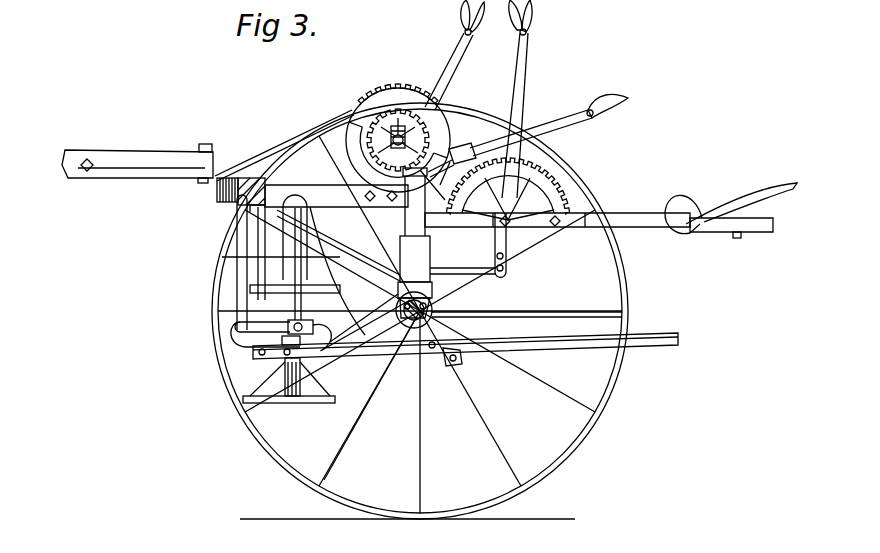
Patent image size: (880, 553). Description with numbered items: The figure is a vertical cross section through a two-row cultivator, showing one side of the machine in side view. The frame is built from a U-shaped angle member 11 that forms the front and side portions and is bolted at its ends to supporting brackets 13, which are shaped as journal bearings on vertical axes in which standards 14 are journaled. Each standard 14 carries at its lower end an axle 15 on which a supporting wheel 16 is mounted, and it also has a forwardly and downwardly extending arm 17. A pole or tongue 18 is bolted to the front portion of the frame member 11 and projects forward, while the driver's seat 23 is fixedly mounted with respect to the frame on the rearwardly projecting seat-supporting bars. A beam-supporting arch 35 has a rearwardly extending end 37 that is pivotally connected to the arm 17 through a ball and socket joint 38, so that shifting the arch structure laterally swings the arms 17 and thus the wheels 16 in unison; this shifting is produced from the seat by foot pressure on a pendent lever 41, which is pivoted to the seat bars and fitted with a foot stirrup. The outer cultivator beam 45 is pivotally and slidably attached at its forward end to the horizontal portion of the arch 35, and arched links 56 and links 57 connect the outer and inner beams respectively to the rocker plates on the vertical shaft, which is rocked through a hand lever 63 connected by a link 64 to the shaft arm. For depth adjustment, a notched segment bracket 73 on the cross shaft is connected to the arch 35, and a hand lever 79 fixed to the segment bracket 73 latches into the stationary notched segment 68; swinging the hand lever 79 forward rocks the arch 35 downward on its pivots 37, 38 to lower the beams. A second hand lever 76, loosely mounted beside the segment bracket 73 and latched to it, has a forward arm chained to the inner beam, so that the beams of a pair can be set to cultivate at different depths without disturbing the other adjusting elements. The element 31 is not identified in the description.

The U-shaped angle member 11 is at (214, 197).
The supporting bracket 13 is at (427, 243).
The standard 14 is at (499, 168).
The axle 15 is at (527, 301).
The supporting wheel 16 is at (407, 311).
The arm 17 is at (369, 398).
The pole or tongue 18 is at (137, 156).
The driver's seat 23 is at (731, 199).
The rod 31 is at (284, 145).
The arch 35 is at (217, 262).
The rearwardly extending end 37 is at (246, 337).
The ball and socket joint 38 is at (361, 339).
The pendent lever 41 is at (442, 376).
The outer beam 45 is at (465, 354).
The arched link 56 is at (242, 262).
The link 57 is at (284, 380).
The hand lever 63 is at (533, 99).
The link 64 is at (468, 245).
The notched segment 68 is at (398, 123).
The notched segment bracket 73 is at (398, 142).
The hand lever 76 is at (463, 43).
The hand lever 79 is at (590, 118).